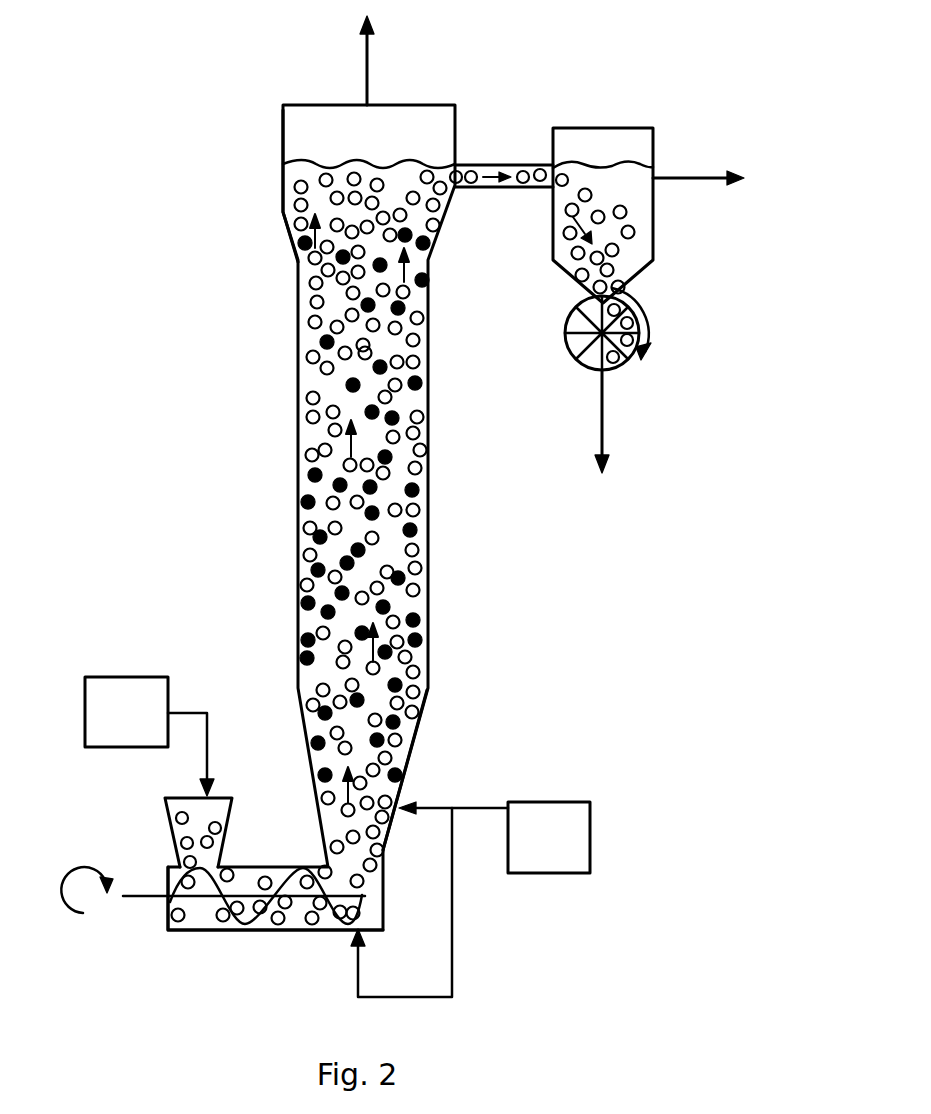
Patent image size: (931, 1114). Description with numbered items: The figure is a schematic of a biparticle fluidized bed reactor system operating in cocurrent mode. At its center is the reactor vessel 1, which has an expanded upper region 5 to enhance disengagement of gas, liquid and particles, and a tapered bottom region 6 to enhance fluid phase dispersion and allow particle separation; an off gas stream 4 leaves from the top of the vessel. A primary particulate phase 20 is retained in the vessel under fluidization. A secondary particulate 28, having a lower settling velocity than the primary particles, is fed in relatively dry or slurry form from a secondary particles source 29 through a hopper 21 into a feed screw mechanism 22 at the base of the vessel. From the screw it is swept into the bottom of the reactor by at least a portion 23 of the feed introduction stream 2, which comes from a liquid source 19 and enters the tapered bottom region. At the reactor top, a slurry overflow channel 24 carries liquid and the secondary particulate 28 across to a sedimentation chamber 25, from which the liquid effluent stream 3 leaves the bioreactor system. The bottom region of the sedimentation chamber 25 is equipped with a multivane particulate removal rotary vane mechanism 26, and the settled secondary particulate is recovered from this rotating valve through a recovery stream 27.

The reactor vessel 1 is at (428, 527).
The feed introduction stream 2 is at (475, 808).
The liquid effluent stream 3 is at (673, 176).
The off gas stream 4 is at (367, 80).
The expanded upper region 5 is at (292, 226).
The tapered bottom region 6 is at (415, 737).
The liquid source 19 is at (549, 837).
The primary particulate phase 20 is at (308, 502).
The hopper 21 is at (175, 838).
The feed screw mechanism 22 is at (203, 930).
The portion of the feed stream 23 is at (452, 912).
The slurry overflow channel 24 is at (478, 165).
The sedimentation chamber 25 is at (655, 252).
The multivane particulate removal rotary vane mechanism 26 is at (622, 362).
The recovery stream 27 is at (602, 418).
The secondary particulate 28 is at (307, 585).
The secondary particles source 29 is at (149, 736).